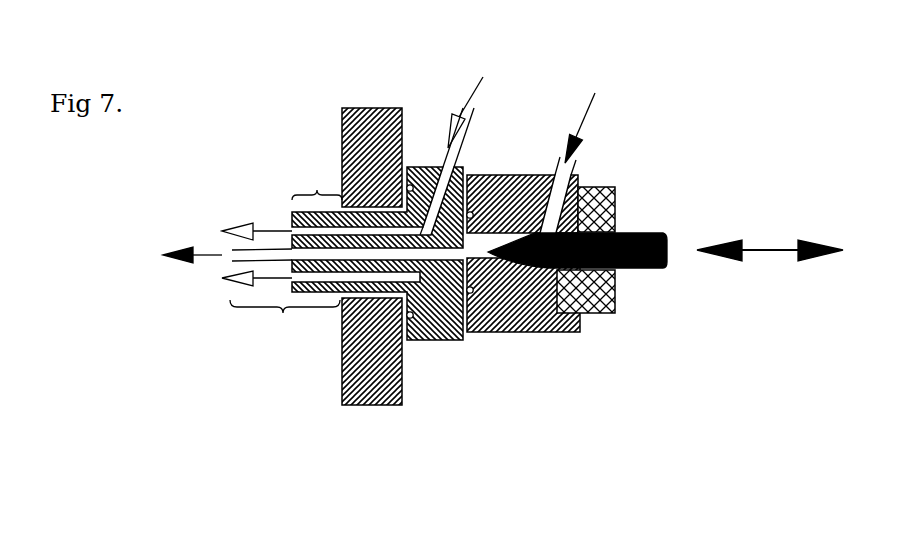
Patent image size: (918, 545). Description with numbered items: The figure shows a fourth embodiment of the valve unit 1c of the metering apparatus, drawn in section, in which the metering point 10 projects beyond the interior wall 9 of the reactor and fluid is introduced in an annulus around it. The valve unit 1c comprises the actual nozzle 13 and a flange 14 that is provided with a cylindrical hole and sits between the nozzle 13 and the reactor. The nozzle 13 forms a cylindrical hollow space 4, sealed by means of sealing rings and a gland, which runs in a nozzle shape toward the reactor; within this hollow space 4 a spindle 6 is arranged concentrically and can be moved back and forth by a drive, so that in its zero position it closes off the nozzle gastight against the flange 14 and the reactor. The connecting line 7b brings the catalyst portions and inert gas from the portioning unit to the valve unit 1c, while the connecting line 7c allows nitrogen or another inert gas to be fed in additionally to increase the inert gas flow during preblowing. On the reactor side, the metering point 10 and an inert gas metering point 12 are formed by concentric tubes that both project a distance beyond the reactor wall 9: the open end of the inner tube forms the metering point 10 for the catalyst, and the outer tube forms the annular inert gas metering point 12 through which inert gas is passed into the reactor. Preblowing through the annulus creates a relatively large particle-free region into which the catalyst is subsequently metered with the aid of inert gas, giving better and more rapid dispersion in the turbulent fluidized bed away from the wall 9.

The valve unit 1c is at (307, 437).
The cylindrical hollow space 4 is at (570, 180).
The spindle 6 is at (650, 268).
The connecting line 7b is at (550, 160).
The connecting line 7c is at (447, 150).
The interior wall of the reactor 9 is at (341, 340).
The metering point 10 is at (232, 262).
The inert gas metering point 12 is at (288, 227).
The nozzle 13 is at (535, 332).
The flange 14 is at (423, 165).